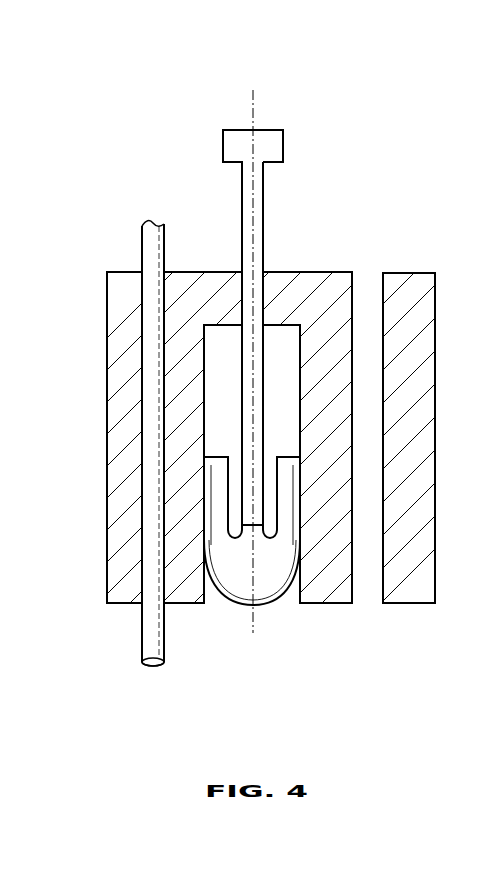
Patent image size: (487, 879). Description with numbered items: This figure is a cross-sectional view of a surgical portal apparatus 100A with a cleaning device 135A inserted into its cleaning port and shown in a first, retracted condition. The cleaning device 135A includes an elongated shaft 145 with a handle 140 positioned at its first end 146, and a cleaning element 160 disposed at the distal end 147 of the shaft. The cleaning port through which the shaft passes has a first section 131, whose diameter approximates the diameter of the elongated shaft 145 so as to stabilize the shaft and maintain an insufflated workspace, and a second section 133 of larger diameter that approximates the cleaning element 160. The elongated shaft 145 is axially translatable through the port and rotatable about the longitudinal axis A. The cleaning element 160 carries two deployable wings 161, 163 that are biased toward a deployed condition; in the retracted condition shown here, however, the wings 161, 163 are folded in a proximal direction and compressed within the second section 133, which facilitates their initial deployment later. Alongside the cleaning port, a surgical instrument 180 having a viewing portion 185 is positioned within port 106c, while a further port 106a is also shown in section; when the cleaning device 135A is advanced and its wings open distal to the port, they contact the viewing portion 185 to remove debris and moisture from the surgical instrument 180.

The surgical portal apparatus 100A is at (208, 97).
The cleaning device 135A is at (265, 117).
The handle 140 is at (274, 148).
The elongated shaft 145 is at (265, 213).
The first end 146 is at (242, 163).
The distal end 147 is at (263, 524).
The surgical instrument 180 is at (141, 247).
The viewing portion 185 is at (160, 667).
The first section 131 is at (242, 285).
The second section 133 is at (353, 307).
The port 106c is at (141, 335).
The port 106a is at (372, 375).
The cleaning element 160 is at (269, 603).
The wing 161 is at (222, 477).
The wing 163 is at (287, 473).